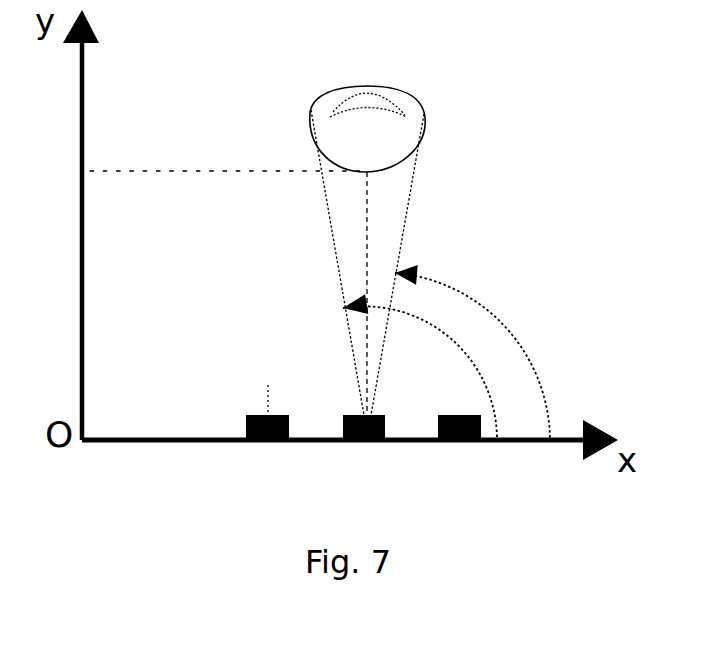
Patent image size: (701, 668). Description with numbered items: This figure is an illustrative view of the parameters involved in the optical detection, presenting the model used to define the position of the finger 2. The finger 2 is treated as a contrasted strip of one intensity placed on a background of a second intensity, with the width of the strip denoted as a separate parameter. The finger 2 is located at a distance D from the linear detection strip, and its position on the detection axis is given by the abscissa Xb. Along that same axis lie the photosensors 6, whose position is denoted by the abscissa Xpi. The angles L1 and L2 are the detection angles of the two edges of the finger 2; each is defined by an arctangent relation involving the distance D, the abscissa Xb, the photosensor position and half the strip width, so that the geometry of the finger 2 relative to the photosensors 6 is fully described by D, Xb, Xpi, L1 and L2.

The finger 2 is at (413, 113).
The photosensors 6 is at (265, 442).
The distance D is at (200, 168).
The detection angle L1 is at (420, 367).
The detection angle L2 is at (472, 352).
The abscissa of the photosensors Xpi is at (267, 377).
The abscissa of the finger Xb is at (370, 457).